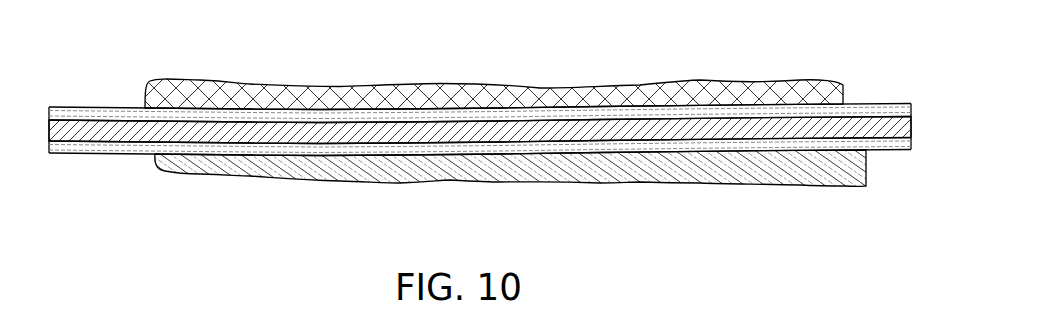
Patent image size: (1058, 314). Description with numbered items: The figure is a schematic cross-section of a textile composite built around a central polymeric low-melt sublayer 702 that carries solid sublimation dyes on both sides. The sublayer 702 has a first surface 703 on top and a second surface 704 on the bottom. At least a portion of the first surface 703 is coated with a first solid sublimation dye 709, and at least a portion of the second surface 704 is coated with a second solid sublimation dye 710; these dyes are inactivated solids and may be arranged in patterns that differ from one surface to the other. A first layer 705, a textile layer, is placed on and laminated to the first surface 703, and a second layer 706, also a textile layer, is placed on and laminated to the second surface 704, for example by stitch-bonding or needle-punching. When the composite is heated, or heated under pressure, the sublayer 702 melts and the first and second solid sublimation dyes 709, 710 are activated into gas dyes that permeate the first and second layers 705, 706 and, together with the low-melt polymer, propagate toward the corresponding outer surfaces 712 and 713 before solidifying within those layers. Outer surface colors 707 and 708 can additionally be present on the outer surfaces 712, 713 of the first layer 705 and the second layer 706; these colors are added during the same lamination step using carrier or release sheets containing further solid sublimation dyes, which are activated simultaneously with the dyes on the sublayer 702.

The sublayer 702 is at (893, 126).
The first surface 703 is at (480, 84).
The second surface 704 is at (481, 176).
The first layer 705 is at (494, 64).
The second layer 706 is at (510, 194).
The outer surface color 707 is at (494, 64).
The outer surface color 708 is at (510, 194).
The first solid sublimation dye 709 is at (102, 119).
The second solid sublimation dye 710 is at (100, 142).
The outer surface 712 is at (203, 78).
The outer surface 713 is at (212, 173).